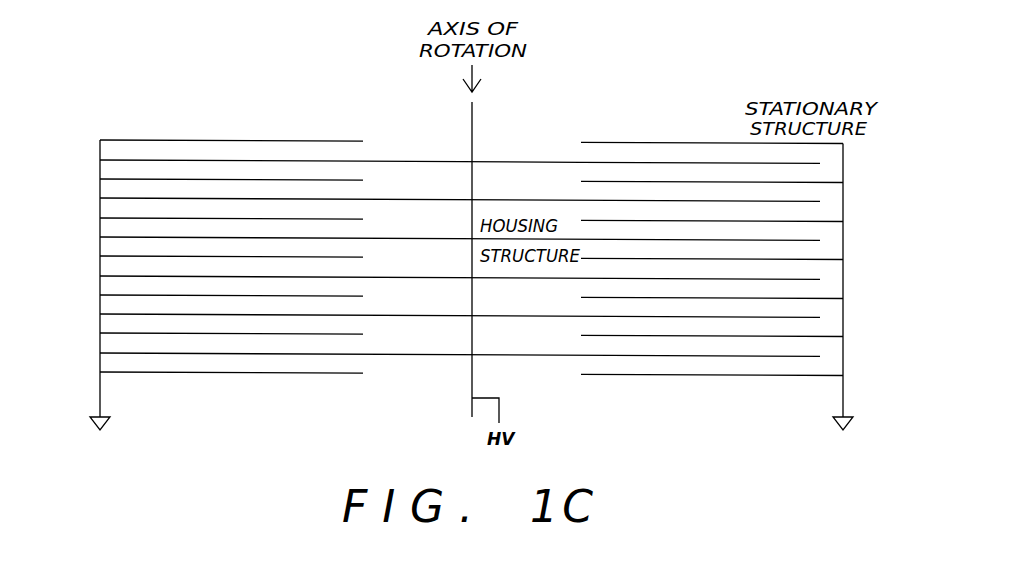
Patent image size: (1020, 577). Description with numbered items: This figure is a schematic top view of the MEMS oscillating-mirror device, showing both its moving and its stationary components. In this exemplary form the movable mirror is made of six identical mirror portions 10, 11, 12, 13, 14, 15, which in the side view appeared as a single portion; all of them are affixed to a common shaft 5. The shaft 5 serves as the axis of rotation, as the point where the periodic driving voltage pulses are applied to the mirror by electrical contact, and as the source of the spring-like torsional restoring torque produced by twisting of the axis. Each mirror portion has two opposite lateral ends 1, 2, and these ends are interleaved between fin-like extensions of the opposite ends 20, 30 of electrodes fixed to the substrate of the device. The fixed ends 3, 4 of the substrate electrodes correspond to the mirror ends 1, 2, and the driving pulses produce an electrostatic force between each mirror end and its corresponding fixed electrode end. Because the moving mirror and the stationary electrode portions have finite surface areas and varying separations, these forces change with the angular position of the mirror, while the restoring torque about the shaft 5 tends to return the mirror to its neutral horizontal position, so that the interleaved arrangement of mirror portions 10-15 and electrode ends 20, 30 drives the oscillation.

The lateral end of the movable mirror 1 is at (192, 159).
The lateral end of the movable mirror 2 is at (648, 161).
The fixed end of the substrate electrode 3 is at (270, 140).
The fixed end of the substrate electrode 4 is at (727, 143).
The axis of rotation 5 is at (473, 126).
The mirror portion 10 is at (391, 160).
The mirror portion 11 is at (384, 198).
The mirror portion 12 is at (384, 237).
The mirror portion 13 is at (384, 276).
The mirror portion 14 is at (384, 314).
The mirror portion 15 is at (384, 353).
The electrode end 20 is at (99, 247).
The electrode end 30 is at (845, 263).